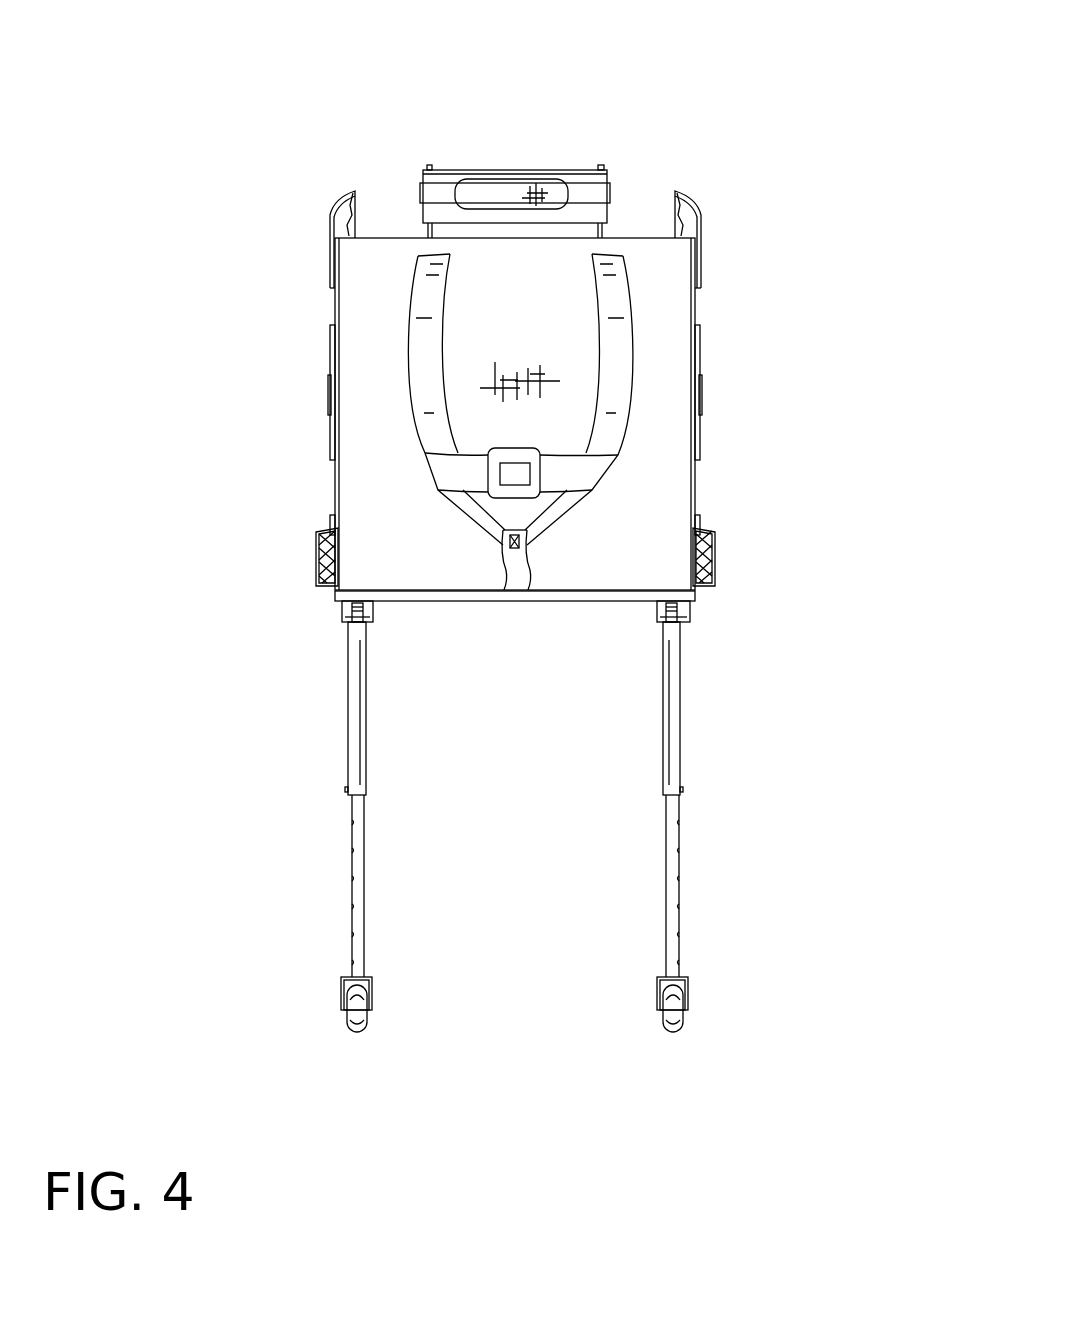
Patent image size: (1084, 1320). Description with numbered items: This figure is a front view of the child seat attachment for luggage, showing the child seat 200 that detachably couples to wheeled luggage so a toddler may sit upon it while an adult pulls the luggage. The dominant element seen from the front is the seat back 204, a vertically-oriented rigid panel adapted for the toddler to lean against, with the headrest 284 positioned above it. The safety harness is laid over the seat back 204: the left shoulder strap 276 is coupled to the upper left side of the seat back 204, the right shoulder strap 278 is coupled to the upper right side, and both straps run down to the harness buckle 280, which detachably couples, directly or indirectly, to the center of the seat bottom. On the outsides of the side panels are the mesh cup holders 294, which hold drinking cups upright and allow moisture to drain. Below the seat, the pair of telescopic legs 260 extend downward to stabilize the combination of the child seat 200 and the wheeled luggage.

The child seat 200 is at (840, 243).
The seat back 204 is at (368, 380).
The pair of telescopic legs 260 is at (288, 607).
The left shoulder strap 276 is at (618, 305).
The right shoulder strap 278 is at (433, 297).
The harness buckle 280 is at (535, 450).
The headrest 284 is at (506, 172).
The mesh cup holders 294 is at (322, 552).